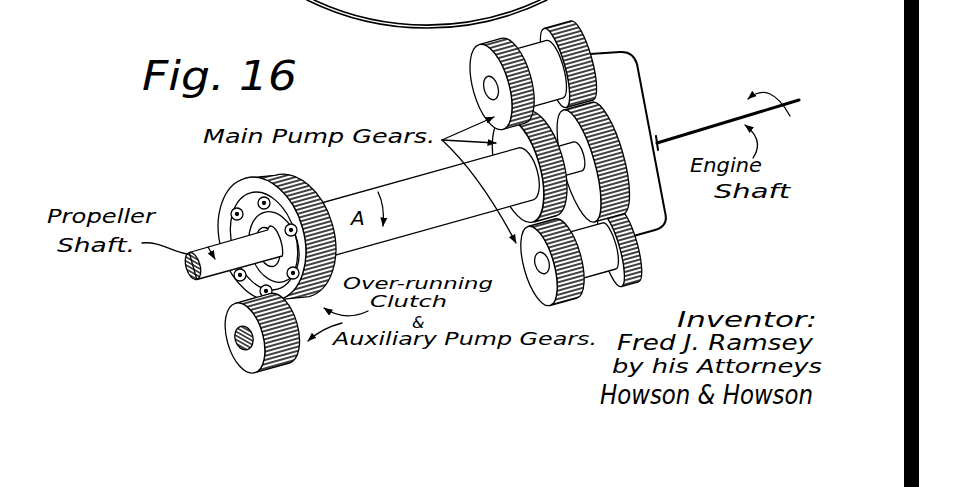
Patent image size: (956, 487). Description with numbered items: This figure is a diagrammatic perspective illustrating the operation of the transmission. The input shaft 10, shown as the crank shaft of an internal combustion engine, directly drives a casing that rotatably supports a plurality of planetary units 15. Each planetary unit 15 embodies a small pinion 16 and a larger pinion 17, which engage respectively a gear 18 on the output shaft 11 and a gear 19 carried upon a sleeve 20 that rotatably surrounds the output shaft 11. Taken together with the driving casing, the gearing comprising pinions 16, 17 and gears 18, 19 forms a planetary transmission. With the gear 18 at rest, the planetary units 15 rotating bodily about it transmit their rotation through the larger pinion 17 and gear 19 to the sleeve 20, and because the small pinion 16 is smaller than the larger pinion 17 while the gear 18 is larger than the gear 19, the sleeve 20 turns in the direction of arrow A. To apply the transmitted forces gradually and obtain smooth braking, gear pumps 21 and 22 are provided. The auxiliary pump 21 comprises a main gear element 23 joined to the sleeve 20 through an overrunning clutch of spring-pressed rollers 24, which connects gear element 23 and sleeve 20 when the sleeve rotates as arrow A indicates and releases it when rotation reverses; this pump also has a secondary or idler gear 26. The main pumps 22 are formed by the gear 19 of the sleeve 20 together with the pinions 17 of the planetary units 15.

The input shaft 10 is at (702, 129).
The output shaft 11 is at (390, 0).
The planetary unit 15 is at (531, 53).
The small pinion 16 is at (576, 35).
The larger pinion 17 is at (481, 61).
The gear 18 is at (608, 123).
The gear 19 is at (521, 222).
The sleeve 20 is at (404, 186).
The gear pump 21 is at (226, 314).
The gear pump 22 is at (481, 108).
The main gear element 23 is at (242, 192).
The spring-pressed rollers 24 is at (240, 217).
The idler gear 26 is at (258, 368).